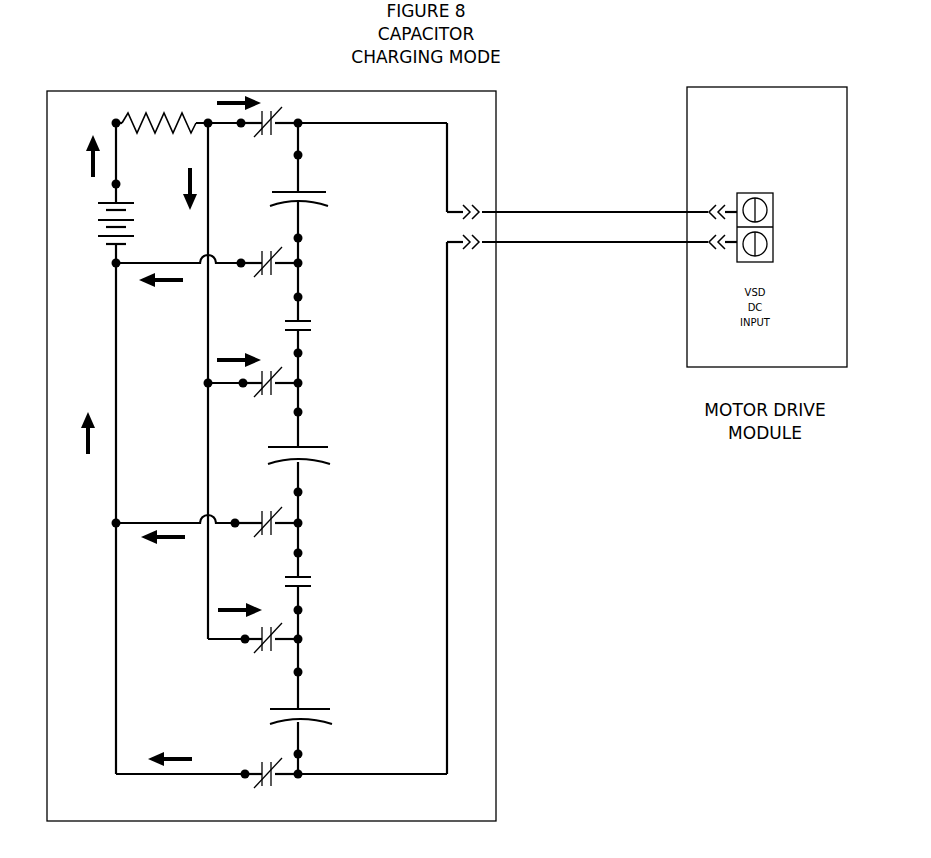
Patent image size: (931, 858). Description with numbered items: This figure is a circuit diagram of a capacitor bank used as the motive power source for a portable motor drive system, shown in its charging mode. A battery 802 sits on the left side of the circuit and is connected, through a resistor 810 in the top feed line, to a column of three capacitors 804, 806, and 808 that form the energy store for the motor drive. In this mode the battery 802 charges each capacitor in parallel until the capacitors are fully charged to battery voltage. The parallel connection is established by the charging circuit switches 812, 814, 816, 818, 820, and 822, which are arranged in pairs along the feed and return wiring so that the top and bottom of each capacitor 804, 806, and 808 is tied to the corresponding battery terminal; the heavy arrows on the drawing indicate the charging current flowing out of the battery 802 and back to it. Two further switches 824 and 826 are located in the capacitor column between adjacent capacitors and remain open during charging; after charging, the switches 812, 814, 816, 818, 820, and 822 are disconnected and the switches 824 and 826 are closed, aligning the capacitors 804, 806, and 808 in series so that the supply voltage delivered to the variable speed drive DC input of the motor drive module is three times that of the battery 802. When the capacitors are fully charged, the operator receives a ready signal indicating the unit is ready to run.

The battery 802 is at (84, 236).
The capacitor 804 is at (326, 192).
The capacitor 806 is at (324, 447).
The capacitor 808 is at (326, 709).
The resistor 810 is at (166, 133).
The switch 812 is at (266, 138).
The switch 814 is at (262, 282).
The switch 816 is at (265, 398).
The switch 818 is at (262, 512).
The switch 820 is at (265, 650).
The switch 822 is at (268, 762).
The switch 824 is at (311, 330).
The switch 826 is at (311, 586).